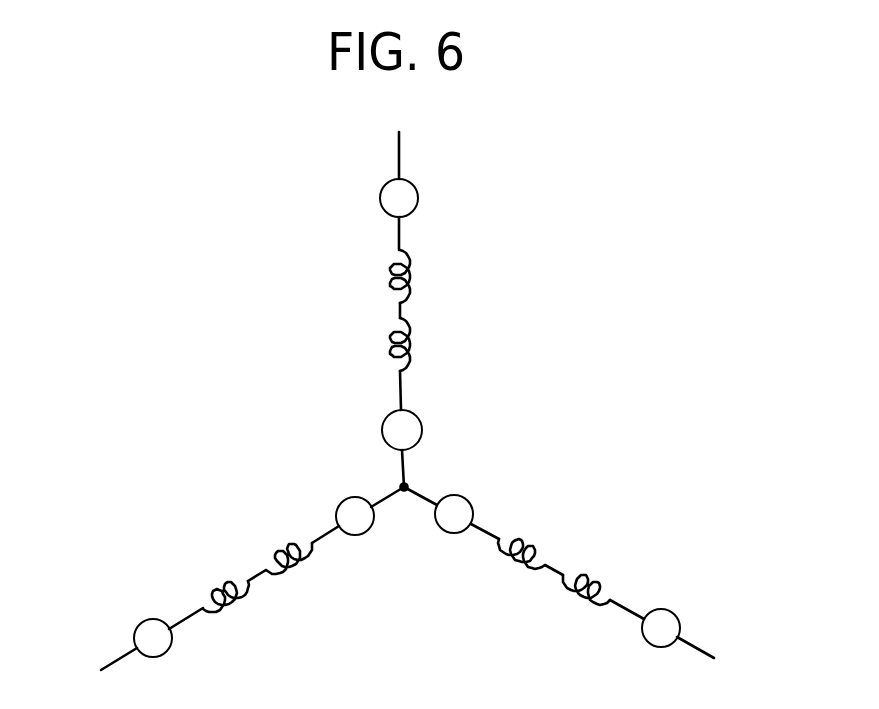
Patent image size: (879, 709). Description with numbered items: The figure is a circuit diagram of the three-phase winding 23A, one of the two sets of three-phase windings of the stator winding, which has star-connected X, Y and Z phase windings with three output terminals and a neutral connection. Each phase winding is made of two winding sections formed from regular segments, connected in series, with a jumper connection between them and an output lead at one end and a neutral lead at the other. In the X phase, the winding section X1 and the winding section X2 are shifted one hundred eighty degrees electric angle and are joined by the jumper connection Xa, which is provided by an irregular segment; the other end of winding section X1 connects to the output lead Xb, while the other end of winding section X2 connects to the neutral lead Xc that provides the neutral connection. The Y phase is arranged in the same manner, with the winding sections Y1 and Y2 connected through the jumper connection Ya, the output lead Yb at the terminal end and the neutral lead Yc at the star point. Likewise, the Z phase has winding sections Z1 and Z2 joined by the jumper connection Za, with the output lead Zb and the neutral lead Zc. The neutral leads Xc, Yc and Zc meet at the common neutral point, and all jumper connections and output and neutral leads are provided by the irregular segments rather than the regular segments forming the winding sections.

The three-phase winding 23A is at (598, 238).
The output lead Xb is at (399, 233).
The winding section X1 is at (411, 278).
The jumper connection Xa is at (399, 304).
The winding section X2 is at (415, 346).
The neutral lead Xc is at (404, 462).
The neutral lead Yc is at (387, 494).
The winding section Y2 is at (292, 572).
The jumper connection Ya is at (253, 575).
The winding section Y1 is at (233, 613).
The output lead Yb is at (115, 657).
The neutral lead Zc is at (423, 495).
The winding section Z2 is at (517, 567).
The jumper connection Za is at (557, 568).
The winding section Z1 is at (577, 600).
The output lead Zb is at (695, 642).